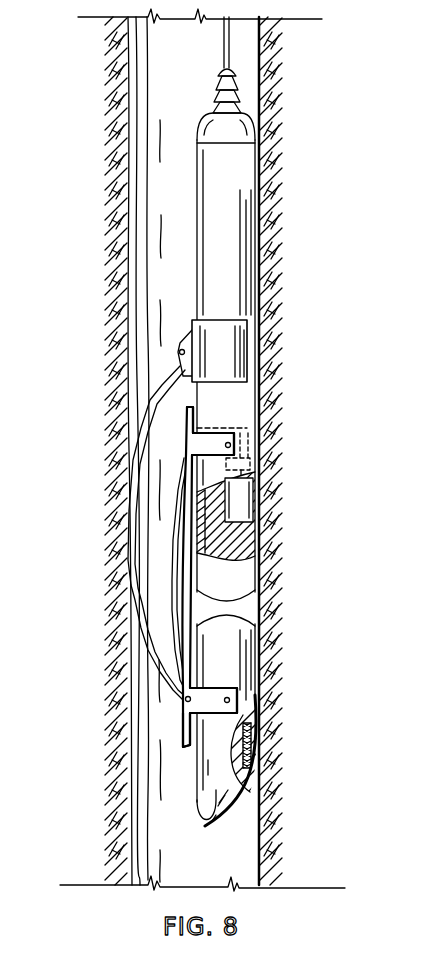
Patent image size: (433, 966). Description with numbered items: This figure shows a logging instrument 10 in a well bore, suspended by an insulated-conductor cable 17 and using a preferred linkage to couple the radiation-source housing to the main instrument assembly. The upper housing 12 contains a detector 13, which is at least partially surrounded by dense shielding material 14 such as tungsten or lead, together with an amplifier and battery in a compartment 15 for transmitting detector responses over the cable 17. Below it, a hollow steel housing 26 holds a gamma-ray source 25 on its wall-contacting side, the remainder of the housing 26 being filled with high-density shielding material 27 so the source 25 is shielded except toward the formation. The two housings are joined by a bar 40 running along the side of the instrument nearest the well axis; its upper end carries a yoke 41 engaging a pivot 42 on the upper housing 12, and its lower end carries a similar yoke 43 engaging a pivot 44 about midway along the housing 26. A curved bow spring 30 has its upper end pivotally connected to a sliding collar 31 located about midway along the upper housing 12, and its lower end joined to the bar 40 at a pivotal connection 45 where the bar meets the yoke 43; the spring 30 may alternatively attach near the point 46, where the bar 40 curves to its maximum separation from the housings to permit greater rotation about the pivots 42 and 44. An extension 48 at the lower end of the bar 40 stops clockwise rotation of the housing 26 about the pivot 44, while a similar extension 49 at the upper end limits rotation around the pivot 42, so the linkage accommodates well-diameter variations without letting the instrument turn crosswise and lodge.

The logging instrument 10 is at (209, 431).
The upper housing 12 is at (186, 188).
The detector 13 is at (244, 493).
The shielding material 14 is at (240, 540).
The compartment 15 is at (245, 237).
The suspending cable 17 is at (229, 52).
The source 25 is at (254, 742).
The housing 26 is at (206, 821).
The shielding material 27 is at (258, 782).
The bow spring 30 is at (137, 472).
The sliding collar 31 is at (232, 348).
The bar 40 is at (192, 583).
The yoke 41 is at (222, 433).
The pivot 42 is at (232, 446).
The yoke 43 is at (215, 693).
The pivot 44 is at (231, 700).
The pivotal connection 45 is at (186, 703).
The point of maximum separation 46 is at (165, 604).
The extension 48 is at (185, 746).
The extension 49 is at (183, 408).